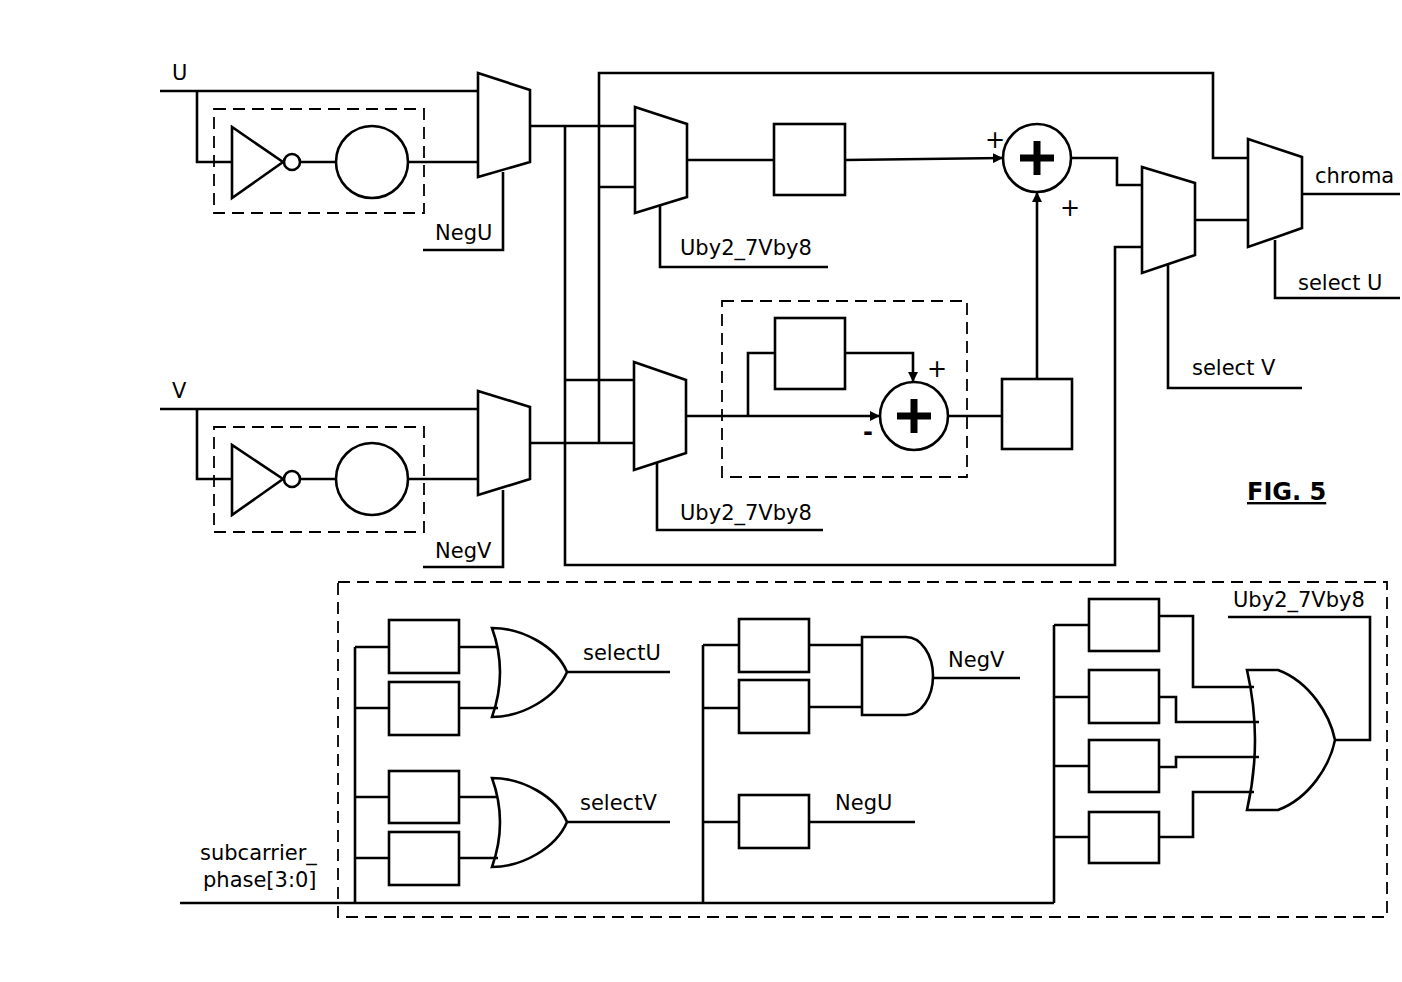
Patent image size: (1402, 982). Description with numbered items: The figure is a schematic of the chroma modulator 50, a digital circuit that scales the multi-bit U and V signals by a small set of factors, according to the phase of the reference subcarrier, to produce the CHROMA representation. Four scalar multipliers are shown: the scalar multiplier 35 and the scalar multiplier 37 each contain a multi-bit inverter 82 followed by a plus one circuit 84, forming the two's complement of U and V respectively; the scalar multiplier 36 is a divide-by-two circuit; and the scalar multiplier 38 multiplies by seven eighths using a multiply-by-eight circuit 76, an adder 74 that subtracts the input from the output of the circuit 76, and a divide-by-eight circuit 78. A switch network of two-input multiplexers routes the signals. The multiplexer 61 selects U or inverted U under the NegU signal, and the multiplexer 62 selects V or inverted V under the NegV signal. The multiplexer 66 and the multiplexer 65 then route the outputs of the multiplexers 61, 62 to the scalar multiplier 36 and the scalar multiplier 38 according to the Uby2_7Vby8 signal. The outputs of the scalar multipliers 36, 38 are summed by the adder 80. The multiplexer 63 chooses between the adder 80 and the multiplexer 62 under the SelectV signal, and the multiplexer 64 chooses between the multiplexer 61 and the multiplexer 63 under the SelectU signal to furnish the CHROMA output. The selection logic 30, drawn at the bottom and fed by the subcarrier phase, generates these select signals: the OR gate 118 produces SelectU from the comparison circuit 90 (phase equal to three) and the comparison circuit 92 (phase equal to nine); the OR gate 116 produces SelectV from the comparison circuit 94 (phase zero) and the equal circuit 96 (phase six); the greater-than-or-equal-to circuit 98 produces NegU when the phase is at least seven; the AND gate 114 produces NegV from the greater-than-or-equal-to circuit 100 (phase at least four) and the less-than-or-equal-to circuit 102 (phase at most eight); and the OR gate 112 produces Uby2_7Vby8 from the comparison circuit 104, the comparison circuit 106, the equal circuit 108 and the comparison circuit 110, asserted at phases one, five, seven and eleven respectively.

The selection logic 30 is at (1213, 580).
The scalar multiplier 35 is at (233, 215).
The scalar multiplier 36 is at (810, 124).
The scalar multiplier 37 is at (223, 537).
The scalar multiplier 38 is at (920, 300).
The chroma modulator 50 is at (1208, 424).
The multiplexer 61 is at (502, 80).
The multiplexer 62 is at (502, 396).
The multiplexer 63 is at (1167, 170).
The multiplexer 64 is at (1276, 140).
The multiplexer 65 is at (667, 373).
The multiplexer 66 is at (662, 115).
The adder 74 is at (914, 450).
The multiply-by-eight circuit 76 is at (845, 327).
The divide-by-eight circuit 78 is at (1055, 379).
The adder 80 is at (1057, 122).
The multi-bit inverter 82 is at (257, 188).
The plus one circuit 84 is at (372, 198).
The comparison circuit 90 is at (389, 638).
The comparison circuit 92 is at (388, 689).
The comparison circuit 94 is at (388, 777).
The equal circuit 96 is at (388, 848).
The greater-than-or-equal-to circuit 98 is at (809, 848).
The greater-than-or-equal-to circuit 100 is at (739, 619).
The less-than-or-equal-to circuit 102 is at (809, 733).
The comparison circuit 104 is at (1088, 608).
The comparison circuit 106 is at (1088, 712).
The equal circuit 108 is at (1088, 782).
The comparison circuit 110 is at (1140, 863).
The OR gate 112 is at (1263, 817).
The AND gate 114 is at (879, 637).
The OR gate 116 is at (548, 793).
The OR gate 118 is at (548, 638).